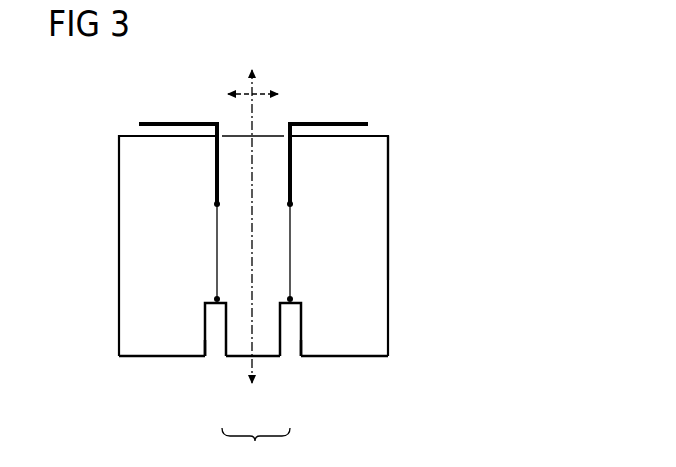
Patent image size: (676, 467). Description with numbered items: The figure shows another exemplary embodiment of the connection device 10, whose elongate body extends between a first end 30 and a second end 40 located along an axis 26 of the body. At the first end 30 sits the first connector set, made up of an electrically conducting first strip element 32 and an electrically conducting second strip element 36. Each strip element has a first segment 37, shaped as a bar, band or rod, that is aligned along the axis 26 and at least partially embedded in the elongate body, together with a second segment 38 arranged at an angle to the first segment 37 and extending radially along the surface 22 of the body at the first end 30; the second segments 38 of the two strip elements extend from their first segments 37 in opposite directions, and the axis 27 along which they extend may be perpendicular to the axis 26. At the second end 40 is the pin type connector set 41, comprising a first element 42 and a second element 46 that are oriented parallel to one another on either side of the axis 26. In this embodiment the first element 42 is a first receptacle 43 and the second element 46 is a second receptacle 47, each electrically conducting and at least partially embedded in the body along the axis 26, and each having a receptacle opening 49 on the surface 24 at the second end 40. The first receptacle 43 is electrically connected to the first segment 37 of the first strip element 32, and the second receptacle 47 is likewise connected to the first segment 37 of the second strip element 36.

The connection device 10 is at (479, 231).
The surface 22 is at (132, 136).
The surface 24 is at (136, 357).
The axis 26 is at (255, 64).
The axis 27 is at (245, 94).
The first end 30 is at (411, 108).
The first strip element 32 is at (188, 115).
The second strip element 36 is at (345, 115).
The first segment 37 is at (215, 165).
The second segment 38 is at (143, 123).
The second end 40 is at (366, 364).
The pin type connector set 41 is at (256, 447).
The first element 42 is at (220, 362).
The first receptacle 43 is at (204, 312).
The second element 46 is at (284, 362).
The second receptacle 47 is at (302, 313).
The receptacle opening 49 is at (213, 357).